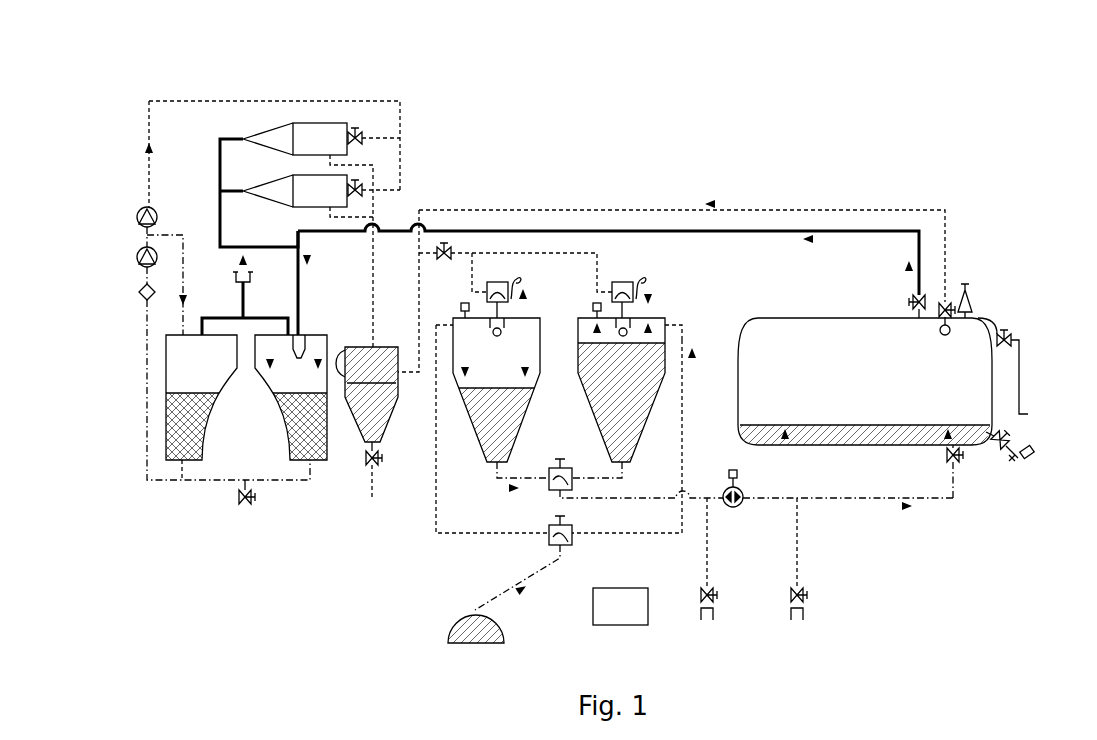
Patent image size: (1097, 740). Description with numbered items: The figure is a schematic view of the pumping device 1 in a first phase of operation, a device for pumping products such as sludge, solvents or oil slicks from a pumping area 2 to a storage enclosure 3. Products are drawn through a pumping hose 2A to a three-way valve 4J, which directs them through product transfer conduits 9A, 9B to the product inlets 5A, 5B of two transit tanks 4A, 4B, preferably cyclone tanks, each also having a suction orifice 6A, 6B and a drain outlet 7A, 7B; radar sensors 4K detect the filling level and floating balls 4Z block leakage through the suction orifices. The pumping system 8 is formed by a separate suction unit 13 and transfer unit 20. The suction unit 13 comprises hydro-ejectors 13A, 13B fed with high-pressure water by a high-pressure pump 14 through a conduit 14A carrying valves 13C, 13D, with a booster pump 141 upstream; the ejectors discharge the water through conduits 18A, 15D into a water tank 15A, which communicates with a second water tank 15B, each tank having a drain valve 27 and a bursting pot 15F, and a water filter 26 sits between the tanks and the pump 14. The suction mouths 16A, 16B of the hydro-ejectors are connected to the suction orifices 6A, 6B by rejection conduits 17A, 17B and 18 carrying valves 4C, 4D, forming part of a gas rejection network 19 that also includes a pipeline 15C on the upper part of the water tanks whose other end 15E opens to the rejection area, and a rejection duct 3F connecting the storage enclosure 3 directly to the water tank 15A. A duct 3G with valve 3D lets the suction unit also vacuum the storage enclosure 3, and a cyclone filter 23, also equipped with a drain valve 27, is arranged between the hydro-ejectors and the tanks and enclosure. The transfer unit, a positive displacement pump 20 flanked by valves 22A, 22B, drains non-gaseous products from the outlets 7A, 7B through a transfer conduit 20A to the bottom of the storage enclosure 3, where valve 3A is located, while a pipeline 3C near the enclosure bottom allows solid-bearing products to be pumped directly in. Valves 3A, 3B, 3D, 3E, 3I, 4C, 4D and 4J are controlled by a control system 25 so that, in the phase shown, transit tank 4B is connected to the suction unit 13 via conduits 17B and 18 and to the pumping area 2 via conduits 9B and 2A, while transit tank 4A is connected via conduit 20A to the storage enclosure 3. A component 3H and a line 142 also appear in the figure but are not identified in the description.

The pumping device 1 is at (562, 188).
The pumping area 2 is at (452, 619).
The pumping hose 2A is at (521, 572).
The storage enclosure 3 is at (859, 388).
The valve 3A is at (960, 466).
The valve 3B is at (1014, 460).
The pipeline 3C is at (1029, 414).
The valve 3D is at (929, 326).
The valve 3E is at (913, 297).
The rejection duct 3F is at (770, 233).
The duct 3G is at (788, 209).
The safety valve 3H is at (970, 304).
The valve 3I is at (460, 238).
The transit tank 4A is at (484, 376).
The transit tank 4B is at (613, 376).
The valve 4C is at (510, 288).
The valve 4D is at (635, 288).
The valve 4J is at (572, 532).
The radar sensors 4K is at (461, 308).
The floating balls 4Z is at (502, 336).
The product inlet 5A is at (453, 322).
The product inlet 5B is at (670, 325).
The suction orifice 6A is at (508, 318).
The suction orifice 6B is at (628, 318).
The drain outlet 7A is at (497, 470).
The drain outlet 7B is at (626, 470).
The pumping system 8 is at (114, 94).
The product transfer conduit 9A is at (436, 481).
The product transfer conduit 9B is at (684, 432).
The suction unit 13 is at (298, 96).
The hydro-ejector 13A is at (309, 151).
The hydro-ejector 13B is at (309, 203).
The valve 13C is at (375, 133).
The valve 13D is at (375, 185).
The high-pressure pump 14 is at (137, 217).
The conduit 14A is at (222, 101).
The booster pump 141 is at (137, 257).
The branch line 142 is at (184, 268).
The water tank 15A is at (286, 387).
The water tank 15B is at (174, 387).
The pipeline 15C is at (245, 303).
The conduit 15D is at (300, 268).
The other end 15E is at (247, 278).
The bursting pot 15F is at (318, 338).
The suction mouth 16A is at (330, 159).
The suction mouth 16B is at (330, 212).
The rejection conduit 17A is at (476, 264).
The rejection conduit 17B is at (603, 268).
The rejection conduit 18 is at (408, 316).
The conduit 18A is at (219, 222).
The gas rejection network 19 is at (477, 126).
The transfer unit 20 is at (740, 506).
The transfer conduit 20A is at (830, 497).
The valve 22A is at (717, 600).
The valve 22B is at (808, 595).
The cyclone filter 23 is at (364, 391).
The control system 25 is at (612, 615).
The water filter 26 is at (139, 292).
The valve 27 is at (262, 500).